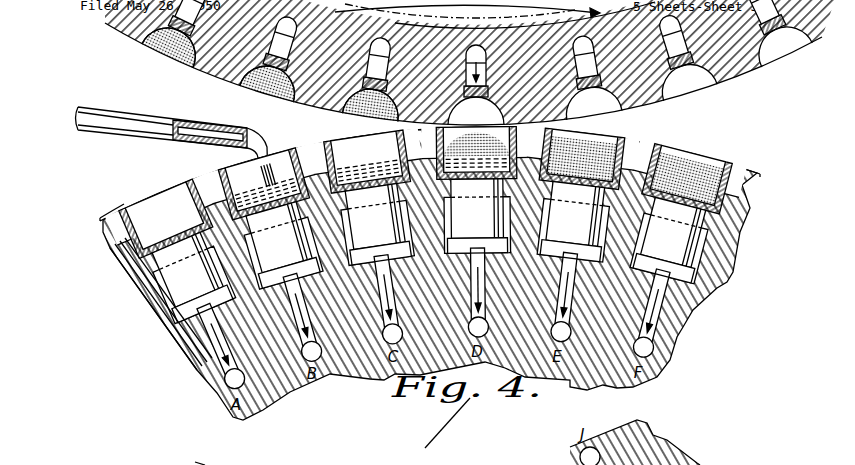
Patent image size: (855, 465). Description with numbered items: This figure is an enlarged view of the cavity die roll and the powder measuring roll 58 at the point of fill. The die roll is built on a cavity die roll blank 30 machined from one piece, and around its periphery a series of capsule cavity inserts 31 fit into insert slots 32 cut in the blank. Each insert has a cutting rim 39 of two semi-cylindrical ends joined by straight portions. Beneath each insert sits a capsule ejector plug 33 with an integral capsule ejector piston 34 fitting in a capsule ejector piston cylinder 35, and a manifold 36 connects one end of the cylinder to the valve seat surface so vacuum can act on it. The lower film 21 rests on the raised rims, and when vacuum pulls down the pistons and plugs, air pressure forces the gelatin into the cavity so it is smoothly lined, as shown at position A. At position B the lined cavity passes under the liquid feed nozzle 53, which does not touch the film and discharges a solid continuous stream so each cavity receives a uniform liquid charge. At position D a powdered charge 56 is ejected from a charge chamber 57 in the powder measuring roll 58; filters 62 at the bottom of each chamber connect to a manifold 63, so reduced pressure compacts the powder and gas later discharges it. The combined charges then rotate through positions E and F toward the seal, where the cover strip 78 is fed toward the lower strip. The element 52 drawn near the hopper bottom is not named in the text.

The table top plate 21 is at (103, 227).
The cylinder block 30 is at (722, 276).
The block end wall 31 is at (118, 233).
The side wall 32 is at (148, 266).
The piston 33 is at (204, 308).
The guide wall 34 is at (173, 313).
The guide liner 35 is at (147, 310).
The roller 36 is at (232, 389).
The measuring cup 39 is at (117, 214).
The hopper bottom plate 52 is at (367, 114).
The filling nozzle 53 is at (231, 128).
The charge of material 56 is at (151, 55).
The pocket 57 is at (602, 105).
The hopper ring 58 is at (738, 80).
The plug 62 is at (335, 75).
The plunger 63 is at (285, 25).
The cam 78 is at (198, 464).